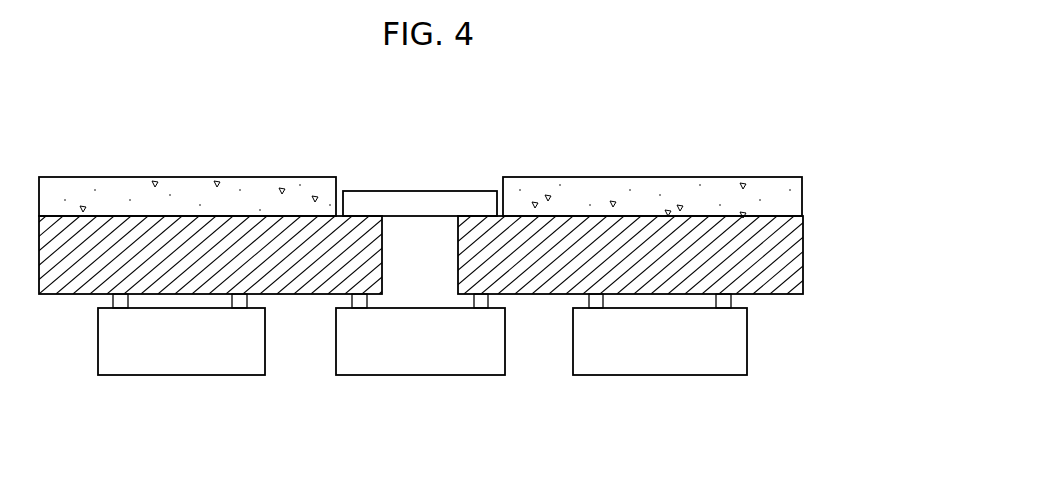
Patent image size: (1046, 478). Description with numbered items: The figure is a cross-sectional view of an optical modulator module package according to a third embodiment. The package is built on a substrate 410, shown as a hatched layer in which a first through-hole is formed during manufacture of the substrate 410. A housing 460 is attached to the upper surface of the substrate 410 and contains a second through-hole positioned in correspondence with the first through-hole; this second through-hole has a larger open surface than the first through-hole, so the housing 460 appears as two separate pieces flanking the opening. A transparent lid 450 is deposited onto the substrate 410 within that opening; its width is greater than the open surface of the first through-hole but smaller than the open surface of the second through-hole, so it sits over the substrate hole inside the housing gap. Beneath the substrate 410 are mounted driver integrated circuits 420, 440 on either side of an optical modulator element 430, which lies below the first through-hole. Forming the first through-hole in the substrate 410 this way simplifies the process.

The substrate 410 is at (786, 252).
The driver integrated circuit 420 is at (178, 377).
The optical modulator element 430 is at (419, 377).
The driver integrated circuit 440 is at (660, 378).
The transparent lid 450 is at (448, 191).
The housing 460 is at (690, 177).